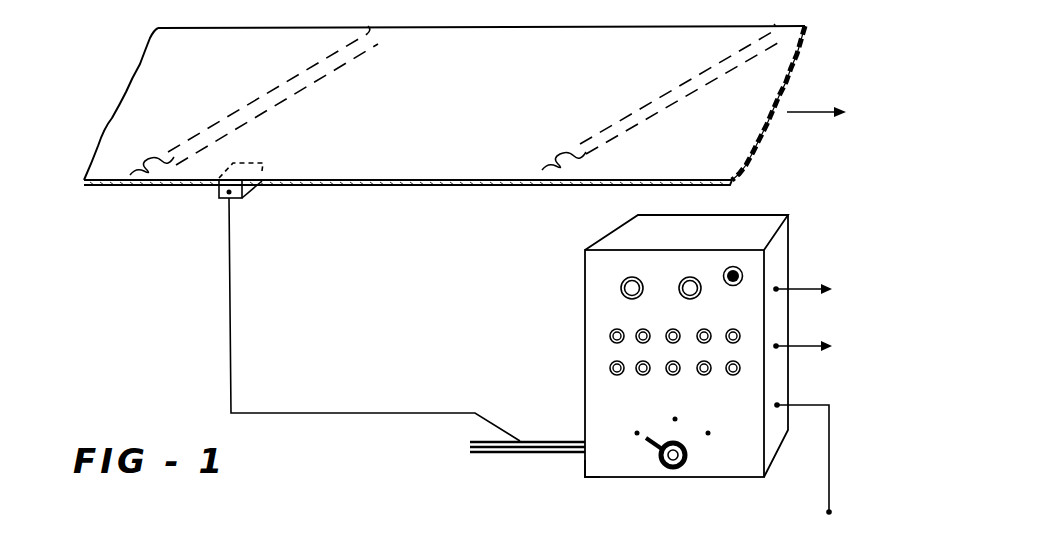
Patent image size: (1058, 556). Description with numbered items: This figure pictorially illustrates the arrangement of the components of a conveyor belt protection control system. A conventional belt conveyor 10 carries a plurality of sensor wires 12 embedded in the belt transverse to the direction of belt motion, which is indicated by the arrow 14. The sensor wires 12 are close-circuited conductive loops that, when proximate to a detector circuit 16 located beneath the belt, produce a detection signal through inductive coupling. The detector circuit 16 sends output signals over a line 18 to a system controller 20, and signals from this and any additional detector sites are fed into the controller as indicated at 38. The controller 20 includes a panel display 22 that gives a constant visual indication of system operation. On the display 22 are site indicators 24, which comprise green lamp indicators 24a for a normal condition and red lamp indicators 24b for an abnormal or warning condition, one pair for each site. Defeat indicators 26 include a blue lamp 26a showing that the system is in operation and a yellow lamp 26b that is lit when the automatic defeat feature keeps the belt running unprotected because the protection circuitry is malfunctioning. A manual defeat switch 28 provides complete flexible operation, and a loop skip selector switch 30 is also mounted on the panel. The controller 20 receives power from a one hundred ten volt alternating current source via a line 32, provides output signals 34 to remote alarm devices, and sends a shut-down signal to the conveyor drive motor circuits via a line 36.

The belt conveyor 10 is at (104, 66).
The sensor wires 12 is at (266, 86).
The arrow 14 is at (817, 112).
The detector circuit 16 is at (219, 190).
The line 18 is at (231, 303).
The system controller 20 is at (631, 214).
The panel display 22 is at (590, 463).
The site indicators 24 is at (619, 357).
The green lamp indicators 24a is at (602, 336).
The red lamp indicators 24b is at (643, 377).
The defeat indicators 26 is at (619, 279).
The blue lamp 26a is at (630, 277).
The yellow lamp 26b is at (690, 277).
The manual defeat switch 28 is at (741, 272).
The loop skip selector switch 30 is at (676, 469).
The line 32 is at (831, 456).
The output signals 34 is at (803, 288).
The line 36 is at (803, 348).
The site signal inputs 38 is at (470, 420).